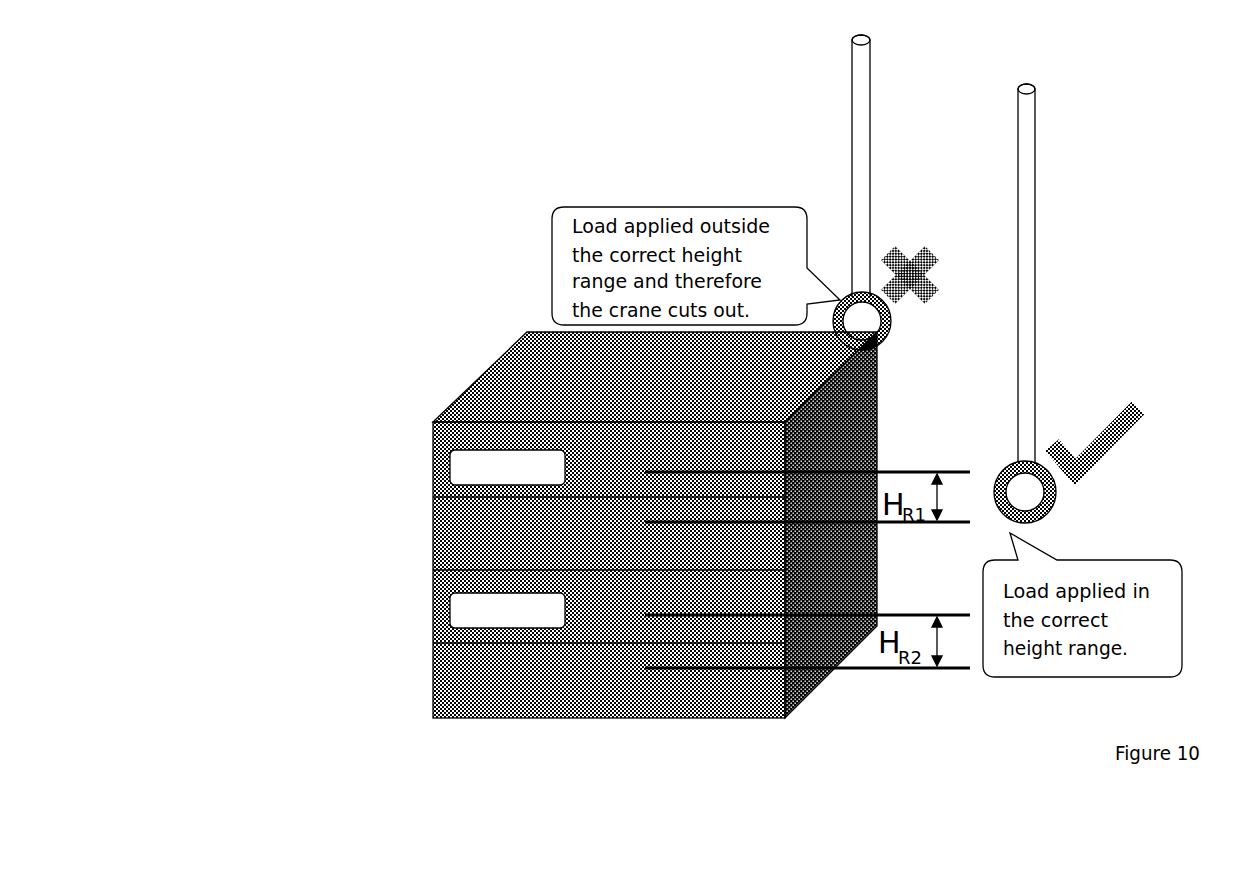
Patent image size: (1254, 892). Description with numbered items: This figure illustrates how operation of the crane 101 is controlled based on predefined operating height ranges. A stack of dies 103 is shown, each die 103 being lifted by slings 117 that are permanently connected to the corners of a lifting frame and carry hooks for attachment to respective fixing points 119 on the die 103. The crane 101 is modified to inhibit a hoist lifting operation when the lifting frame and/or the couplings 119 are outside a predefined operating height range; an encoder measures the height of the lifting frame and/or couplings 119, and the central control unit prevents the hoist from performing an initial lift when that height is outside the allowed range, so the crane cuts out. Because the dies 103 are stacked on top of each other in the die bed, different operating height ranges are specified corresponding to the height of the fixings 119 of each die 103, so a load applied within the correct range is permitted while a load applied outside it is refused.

The crane 101 is at (1138, 120).
The die 103 is at (435, 451).
The sling 117 is at (870, 143).
The fixing point 119 is at (890, 340).